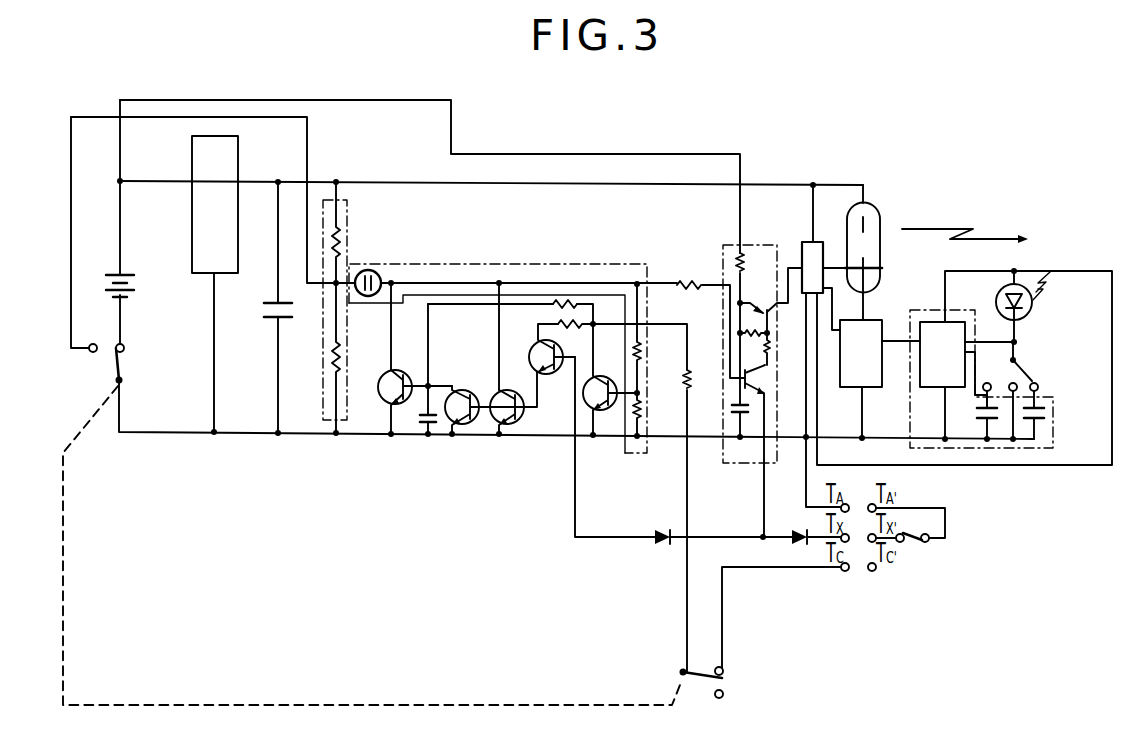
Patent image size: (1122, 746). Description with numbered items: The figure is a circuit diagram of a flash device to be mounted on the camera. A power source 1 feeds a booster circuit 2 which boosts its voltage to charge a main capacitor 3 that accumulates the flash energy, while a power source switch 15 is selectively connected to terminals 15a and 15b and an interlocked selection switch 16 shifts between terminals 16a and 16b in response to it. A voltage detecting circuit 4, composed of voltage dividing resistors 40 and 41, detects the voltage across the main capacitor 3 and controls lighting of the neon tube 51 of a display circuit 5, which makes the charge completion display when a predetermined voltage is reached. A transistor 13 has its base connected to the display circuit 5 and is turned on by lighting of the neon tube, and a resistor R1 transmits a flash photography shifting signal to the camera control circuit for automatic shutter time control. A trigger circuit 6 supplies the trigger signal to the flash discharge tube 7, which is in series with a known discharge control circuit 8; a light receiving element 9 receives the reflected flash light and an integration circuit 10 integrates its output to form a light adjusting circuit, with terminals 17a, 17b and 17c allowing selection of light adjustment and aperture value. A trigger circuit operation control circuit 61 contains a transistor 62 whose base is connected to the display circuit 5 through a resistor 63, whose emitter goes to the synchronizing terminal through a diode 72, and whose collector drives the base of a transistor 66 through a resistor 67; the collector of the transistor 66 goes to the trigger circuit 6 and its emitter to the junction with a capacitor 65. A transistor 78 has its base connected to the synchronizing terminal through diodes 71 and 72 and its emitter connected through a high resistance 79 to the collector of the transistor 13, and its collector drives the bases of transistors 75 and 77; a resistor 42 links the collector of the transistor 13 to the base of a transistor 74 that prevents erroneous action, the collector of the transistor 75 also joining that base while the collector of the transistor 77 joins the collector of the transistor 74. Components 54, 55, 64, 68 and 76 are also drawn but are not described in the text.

The power source 1 is at (132, 284).
The booster circuit 2 is at (239, 147).
The main capacitor 3 is at (263, 311).
The voltage detecting circuit 4 is at (347, 207).
The display circuit 5 is at (473, 264).
The trigger circuit 6 is at (808, 240).
The flash discharge tube 7 is at (870, 212).
The discharge control circuit 8 is at (878, 315).
The light receiving element 9 is at (1032, 304).
The integration circuit 10 is at (1053, 427).
The transistor 13 is at (606, 376).
The power source switch 15 is at (122, 380).
The terminal 15a is at (93, 356).
The terminal 15b is at (124, 346).
The selection switch 16 is at (680, 665).
The terminal 16a is at (724, 694).
The terminal 16b is at (724, 668).
The terminal 17a is at (1038, 383).
The terminal 17b is at (1027, 368).
The terminal 17c is at (989, 382).
The voltage dividing resistor 40 is at (341, 243).
The voltage dividing resistor 41 is at (328, 356).
The resistor 42 is at (568, 302).
The neon tube 51 is at (378, 272).
The resistor 54 is at (641, 352).
The resistor 55 is at (641, 410).
The trigger circuit operation control circuit 61 is at (736, 262).
The transistor 62 is at (758, 388).
The resistor 63 is at (690, 281).
The switching circuit 64 is at (752, 245).
The capacitor 65 is at (731, 409).
The transistor 66 is at (760, 308).
The resistor 67 is at (771, 349).
The resistor 68 is at (748, 337).
The diode 71 is at (664, 528).
The diode 72 is at (798, 528).
The transistor 74 is at (410, 367).
The transistor 75 is at (466, 390).
The capacitor 76 is at (423, 432).
The transistor 77 is at (512, 390).
The transistor 78 is at (535, 350).
The high resistance 79 is at (574, 333).
The resistor R1 is at (699, 384).